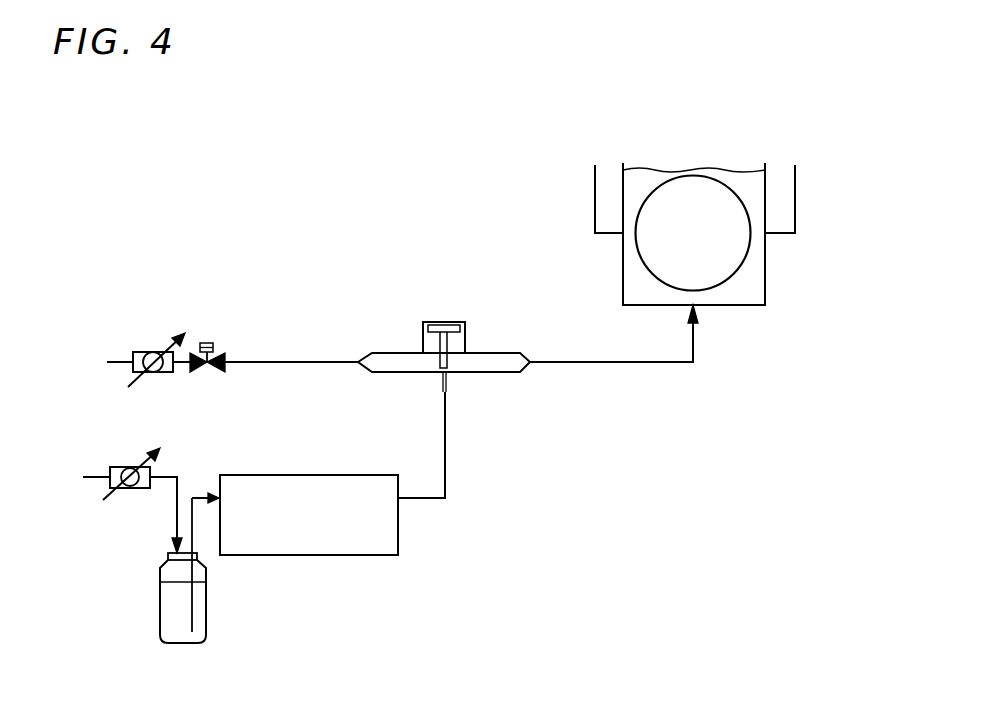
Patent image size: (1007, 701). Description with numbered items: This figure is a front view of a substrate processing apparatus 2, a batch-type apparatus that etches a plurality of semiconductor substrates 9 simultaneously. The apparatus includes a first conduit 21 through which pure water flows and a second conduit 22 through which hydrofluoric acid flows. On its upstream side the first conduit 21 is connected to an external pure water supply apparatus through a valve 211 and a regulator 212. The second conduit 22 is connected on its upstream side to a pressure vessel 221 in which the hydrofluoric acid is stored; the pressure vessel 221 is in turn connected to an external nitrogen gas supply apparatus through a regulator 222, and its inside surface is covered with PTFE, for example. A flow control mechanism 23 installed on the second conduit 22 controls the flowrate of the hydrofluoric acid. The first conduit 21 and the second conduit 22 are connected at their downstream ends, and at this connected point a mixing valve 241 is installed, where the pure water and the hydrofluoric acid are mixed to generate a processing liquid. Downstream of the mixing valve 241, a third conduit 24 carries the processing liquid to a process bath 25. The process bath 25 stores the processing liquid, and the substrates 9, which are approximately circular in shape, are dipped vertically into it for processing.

The substrate processing apparatus 2 is at (182, 136).
The semiconductor substrate 9 is at (698, 195).
The first conduit 21 is at (278, 366).
The valve 211 is at (218, 351).
The regulator 212 is at (142, 352).
The second conduit 22 is at (428, 502).
The pressure vessel 221 is at (207, 600).
The regulator 222 is at (120, 466).
The flow control mechanism 23 is at (350, 557).
The third conduit 24 is at (592, 367).
The mixing valve 241 is at (483, 375).
The process bath 25 is at (767, 273).